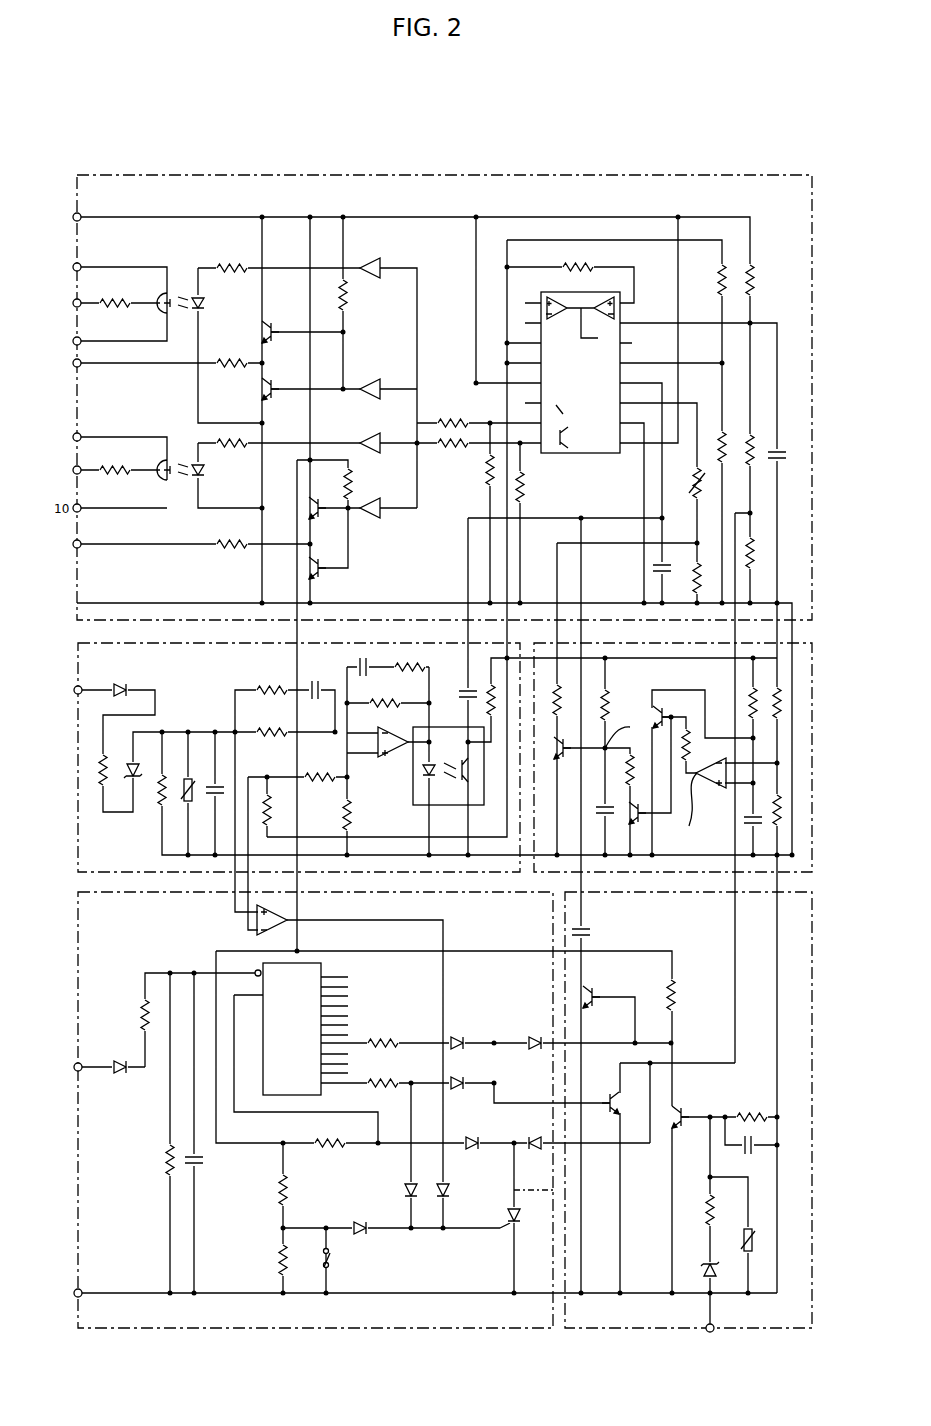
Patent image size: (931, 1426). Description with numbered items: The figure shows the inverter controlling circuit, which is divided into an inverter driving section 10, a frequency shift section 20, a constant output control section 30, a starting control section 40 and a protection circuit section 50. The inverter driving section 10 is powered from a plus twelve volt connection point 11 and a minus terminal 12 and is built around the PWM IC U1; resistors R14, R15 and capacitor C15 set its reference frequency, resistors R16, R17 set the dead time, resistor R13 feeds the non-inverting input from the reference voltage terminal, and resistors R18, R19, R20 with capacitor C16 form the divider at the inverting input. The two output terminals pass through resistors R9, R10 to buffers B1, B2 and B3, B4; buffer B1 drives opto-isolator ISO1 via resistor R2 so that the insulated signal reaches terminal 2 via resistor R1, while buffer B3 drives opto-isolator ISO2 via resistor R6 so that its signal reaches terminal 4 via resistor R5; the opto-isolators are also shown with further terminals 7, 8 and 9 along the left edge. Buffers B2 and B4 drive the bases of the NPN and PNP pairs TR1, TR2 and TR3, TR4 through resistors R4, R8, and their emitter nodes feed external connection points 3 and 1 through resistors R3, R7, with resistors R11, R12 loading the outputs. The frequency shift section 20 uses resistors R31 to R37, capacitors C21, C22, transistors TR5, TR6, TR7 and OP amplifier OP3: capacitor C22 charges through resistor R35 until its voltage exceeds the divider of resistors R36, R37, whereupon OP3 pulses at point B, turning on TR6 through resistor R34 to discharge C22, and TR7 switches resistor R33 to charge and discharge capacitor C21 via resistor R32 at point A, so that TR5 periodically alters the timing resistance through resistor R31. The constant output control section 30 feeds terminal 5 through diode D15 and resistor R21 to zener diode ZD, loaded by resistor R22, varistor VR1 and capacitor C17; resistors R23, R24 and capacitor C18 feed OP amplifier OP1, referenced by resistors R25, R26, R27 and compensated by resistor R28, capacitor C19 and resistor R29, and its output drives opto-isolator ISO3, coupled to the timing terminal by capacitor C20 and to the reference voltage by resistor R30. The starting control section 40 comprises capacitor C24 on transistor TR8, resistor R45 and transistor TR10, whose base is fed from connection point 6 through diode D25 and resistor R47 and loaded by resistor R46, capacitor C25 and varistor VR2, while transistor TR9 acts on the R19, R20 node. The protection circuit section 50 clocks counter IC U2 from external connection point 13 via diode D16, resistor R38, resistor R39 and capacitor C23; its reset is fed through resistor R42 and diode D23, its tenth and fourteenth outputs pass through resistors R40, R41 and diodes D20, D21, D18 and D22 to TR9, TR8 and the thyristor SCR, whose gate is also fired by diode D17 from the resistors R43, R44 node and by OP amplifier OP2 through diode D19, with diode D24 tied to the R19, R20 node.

The inverter driving section 10 is at (482, 175).
The frequency shift section 20 is at (812, 762).
The constant output control section 30 is at (78, 782).
The starting control section 40 is at (812, 1097).
The protection circuit section 50 is at (78, 980).
The connection point 1 is at (71, 545).
The terminal 2 is at (71, 304).
The external connection point 3 is at (71, 364).
The terminal 4 is at (71, 471).
The terminal 5 is at (72, 691).
The connection point 6 is at (709, 1341).
The terminal 7 is at (71, 268).
The terminal 8 is at (71, 342).
The terminal 9 is at (71, 438).
The connection point 11 is at (68, 218).
The minus terminal 12 is at (68, 1294).
The external connection point 13 is at (68, 1068).
The resistor R1 is at (115, 297).
The resistor R2 is at (232, 261).
The resistor R3 is at (232, 356).
The resistor R4 is at (332, 295).
The resistor R5 is at (115, 463).
The resistor R6 is at (232, 455).
The resistor R7 is at (232, 537).
The resistor R8 is at (337, 484).
The resistor R9 is at (453, 416).
The resistor R10 is at (446, 453).
The resistor R11 is at (477, 470).
The resistor R12 is at (532, 487).
The resistor R13 is at (578, 260).
The resistor R14 is at (685, 482).
The resistor R15 is at (685, 578).
The resistor R16 is at (708, 280).
The resistor R17 is at (712, 442).
The resistor R18 is at (762, 280).
The resistor R19 is at (760, 446).
The resistor R20 is at (761, 553).
The resistor R21 is at (113, 763).
The resistor R22 is at (149, 802).
The resistor R23 is at (271, 682).
The resistor R24 is at (271, 725).
The resistor R25 is at (279, 810).
The resistor R26 is at (320, 770).
The resistor R27 is at (332, 821).
The resistor R28 is at (383, 697).
The resistor R29 is at (410, 680).
The resistor R30 is at (502, 700).
The resistor R31 is at (568, 700).
The resistor R32 is at (616, 705).
The resistor R33 is at (642, 773).
The resistor R34 is at (697, 745).
The resistor R35 is at (739, 703).
The resistor R36 is at (789, 703).
The resistor R37 is at (771, 803).
The resistor R38 is at (132, 1015).
The resistor R39 is at (156, 1160).
The resistor R40 is at (383, 1036).
The resistor R41 is at (383, 1076).
The resistor R42 is at (330, 1136).
The resistor R43 is at (270, 1190).
The resistor R44 is at (269, 1260).
The resistor R45 is at (683, 995).
The resistor R46 is at (752, 1109).
The resistor R47 is at (697, 1210).
The capacitor C15 is at (644, 572).
The capacitor C16 is at (787, 449).
The capacitor C17 is at (212, 801).
The capacitor C18 is at (312, 683).
The capacitor C19 is at (375, 663).
The capacitor C20 is at (458, 687).
The capacitor C21 is at (596, 809).
The capacitor C22 is at (739, 828).
The capacitor C23 is at (204, 1170).
The capacitor C24 is at (592, 933).
The capacitor C25 is at (749, 1153).
The diode D15 is at (120, 683).
The diode D16 is at (118, 1077).
The diode D17 is at (359, 1222).
The diode D18 is at (397, 1182).
The diode D19 is at (431, 1182).
The diode D20 is at (456, 1035).
The diode D21 is at (458, 1093).
The diode D22 is at (533, 1035).
The diode D23 is at (475, 1157).
The diode D24 is at (531, 1160).
The diode D25 is at (699, 1260).
The zener diode ZD is at (128, 780).
The NPN-type switching transistor TR1 is at (278, 321).
The PNP-type transistor TR2 is at (278, 382).
The NPN-type switching transistor TR3 is at (303, 508).
The PNP-type transistor TR4 is at (303, 568).
The transistor TR5 is at (567, 740).
The transistor TR6 is at (671, 711).
The transistor TR7 is at (644, 824).
The transistor TR8 is at (601, 994).
The transistor TR9 is at (603, 1097).
The transistor TR10 is at (692, 1111).
The buffer B1 is at (370, 260).
The buffer B2 is at (370, 381).
The buffer B3 is at (370, 435).
The buffer B4 is at (370, 500).
The OP amplifier OP1 is at (391, 753).
The OP amplifier OP2 is at (259, 920).
The OP amplifier OP3 is at (709, 781).
The opto-isolator ISO1 is at (181, 281).
The opto-isolator ISO2 is at (181, 495).
The opto-isolator ISO3 is at (448, 758).
The PWM IC U1 is at (580, 365).
The counter IC U2 is at (280, 1029).
The varistor VR1 is at (183, 779).
The varistor VR2 is at (760, 1240).
The thyristor SCR is at (501, 1209).
The point A is at (622, 731).
The point B is at (690, 807).